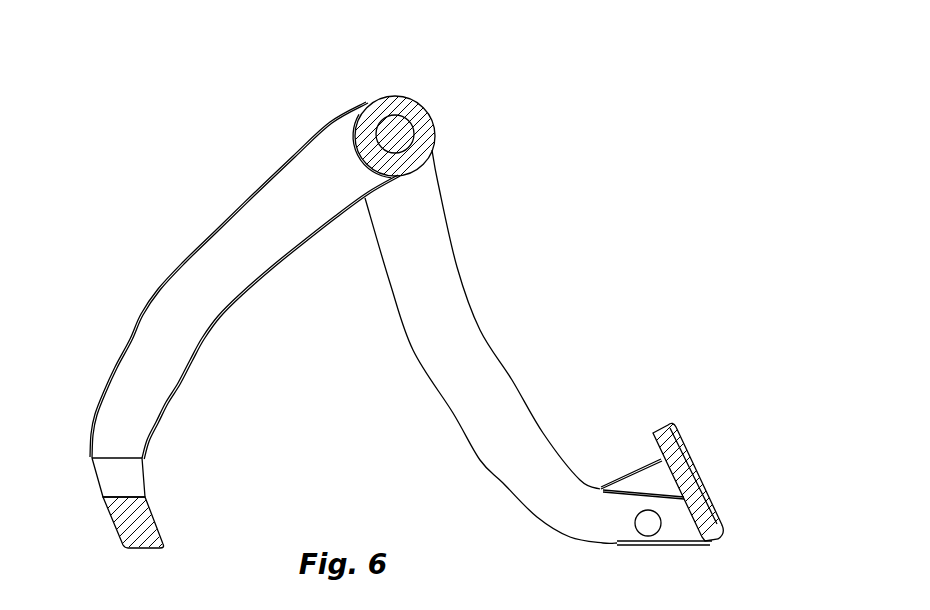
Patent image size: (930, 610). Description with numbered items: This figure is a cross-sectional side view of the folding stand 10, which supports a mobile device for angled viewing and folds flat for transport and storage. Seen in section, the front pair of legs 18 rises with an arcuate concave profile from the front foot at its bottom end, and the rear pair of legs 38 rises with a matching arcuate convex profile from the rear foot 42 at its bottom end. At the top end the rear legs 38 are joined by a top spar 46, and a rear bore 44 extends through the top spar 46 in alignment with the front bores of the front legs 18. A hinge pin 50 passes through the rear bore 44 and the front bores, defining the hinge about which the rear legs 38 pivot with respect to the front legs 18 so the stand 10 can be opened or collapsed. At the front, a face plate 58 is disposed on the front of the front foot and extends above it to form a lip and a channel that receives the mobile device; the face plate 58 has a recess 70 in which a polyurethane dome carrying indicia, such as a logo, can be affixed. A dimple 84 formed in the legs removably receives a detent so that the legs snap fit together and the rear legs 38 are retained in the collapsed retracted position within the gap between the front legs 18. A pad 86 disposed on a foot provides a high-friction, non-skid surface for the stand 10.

The folding stand 10 is at (503, 312).
The front pair of legs 18 is at (432, 267).
The rear pair of legs 38 is at (200, 298).
The rear foot 42 is at (151, 518).
The rear bore 44 is at (416, 106).
The top spar 46 is at (390, 135).
The hinge pin 50 is at (392, 133).
The face plate 58 is at (673, 426).
The recess 70 is at (718, 515).
The dimple 84 is at (636, 518).
The pad 86 is at (678, 550).